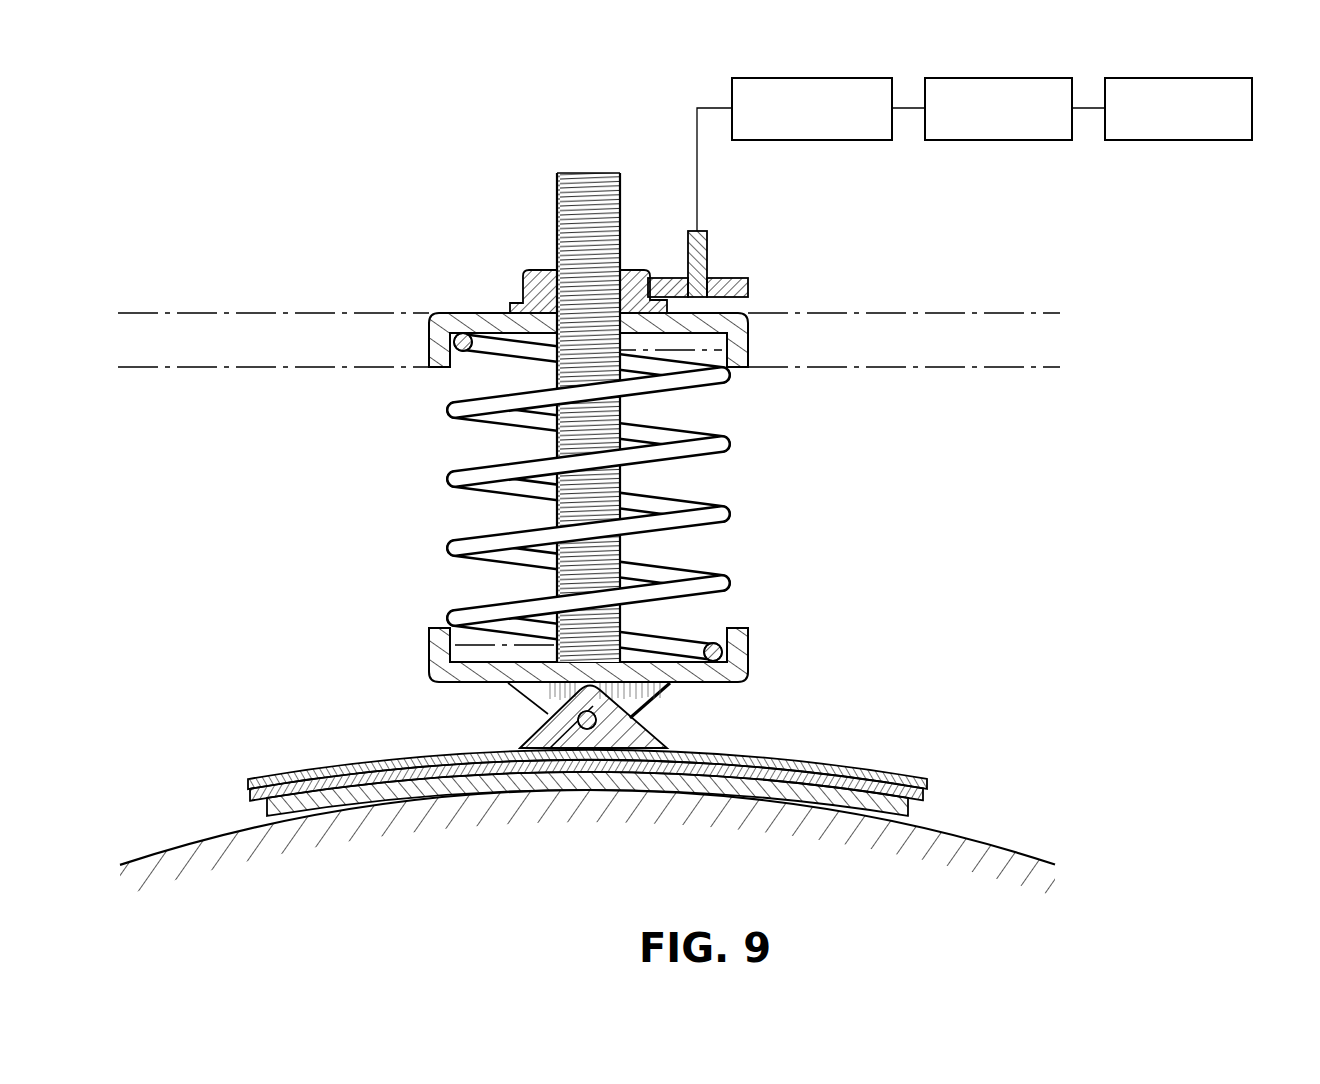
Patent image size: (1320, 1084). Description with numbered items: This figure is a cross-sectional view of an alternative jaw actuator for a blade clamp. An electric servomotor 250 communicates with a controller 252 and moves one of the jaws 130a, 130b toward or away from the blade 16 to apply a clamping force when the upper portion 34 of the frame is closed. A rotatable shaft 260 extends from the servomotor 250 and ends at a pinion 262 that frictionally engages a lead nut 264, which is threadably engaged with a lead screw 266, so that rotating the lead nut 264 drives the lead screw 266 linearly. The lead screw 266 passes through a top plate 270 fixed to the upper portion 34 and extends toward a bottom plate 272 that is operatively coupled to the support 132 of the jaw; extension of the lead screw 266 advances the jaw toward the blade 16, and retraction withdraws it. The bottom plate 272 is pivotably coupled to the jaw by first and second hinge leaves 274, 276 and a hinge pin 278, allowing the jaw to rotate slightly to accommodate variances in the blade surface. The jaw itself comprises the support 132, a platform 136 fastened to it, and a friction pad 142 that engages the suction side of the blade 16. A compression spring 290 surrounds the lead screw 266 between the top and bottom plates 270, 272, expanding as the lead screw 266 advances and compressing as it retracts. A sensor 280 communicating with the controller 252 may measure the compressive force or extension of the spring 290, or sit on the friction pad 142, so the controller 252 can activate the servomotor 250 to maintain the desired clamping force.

The blade 16 is at (165, 849).
The upper portion of the frame 34 is at (176, 311).
The first jaw 130a is at (606, 763).
The second jaw 130b is at (606, 763).
The support 132 is at (276, 779).
The platform 136 is at (250, 794).
The friction pad 142 is at (908, 812).
The servomotor 250 is at (862, 78).
The controller 252 is at (1042, 78).
The rotatable shaft 260 is at (709, 245).
The pinion 262 is at (748, 285).
The lead nut 264 is at (533, 272).
The lead screw 266 is at (557, 195).
The top plate 270 is at (453, 313).
The bottom plate 272 is at (449, 683).
The first hinge leaf 274 is at (530, 700).
The second hinge leaf 276 is at (655, 747).
The hinge pin 278 is at (598, 718).
The sensor 280 is at (1222, 78).
The compression spring 290 is at (556, 414).